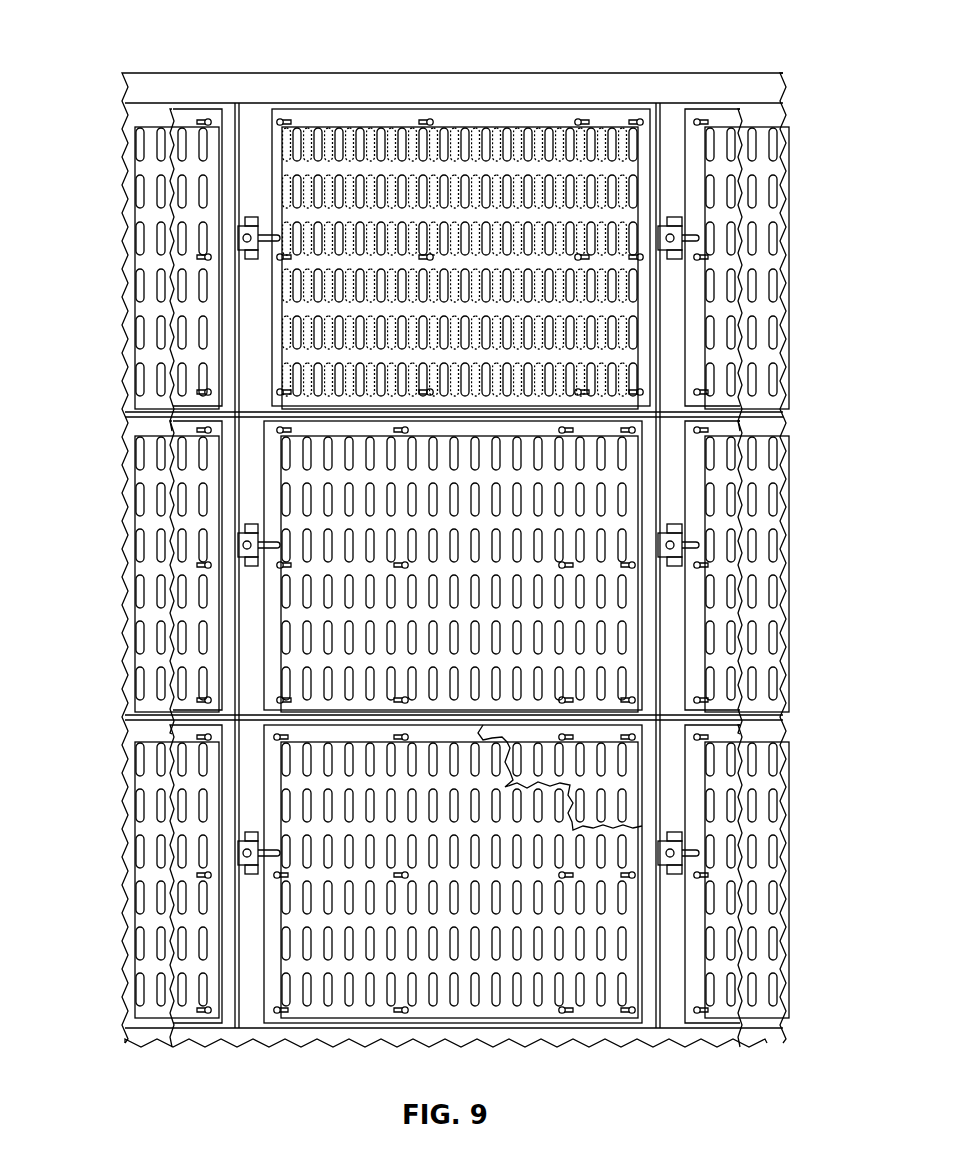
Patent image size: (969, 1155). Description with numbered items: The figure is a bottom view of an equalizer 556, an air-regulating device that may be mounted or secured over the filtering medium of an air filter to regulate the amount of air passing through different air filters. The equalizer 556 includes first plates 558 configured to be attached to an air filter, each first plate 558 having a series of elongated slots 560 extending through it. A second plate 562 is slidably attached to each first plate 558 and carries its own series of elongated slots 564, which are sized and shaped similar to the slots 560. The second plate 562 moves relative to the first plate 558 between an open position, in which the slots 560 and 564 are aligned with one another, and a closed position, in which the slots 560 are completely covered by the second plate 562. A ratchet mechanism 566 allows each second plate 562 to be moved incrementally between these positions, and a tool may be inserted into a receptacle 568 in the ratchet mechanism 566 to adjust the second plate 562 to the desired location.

The equalizer 556 is at (440, 102).
The first plate 558 is at (148, 212).
The elongated slots 560 is at (345, 128).
The second plate 562 is at (160, 120).
The elongated slots 564 is at (400, 127).
The ratchet mechanism 566 is at (255, 216).
The receptacle 568 is at (246, 261).